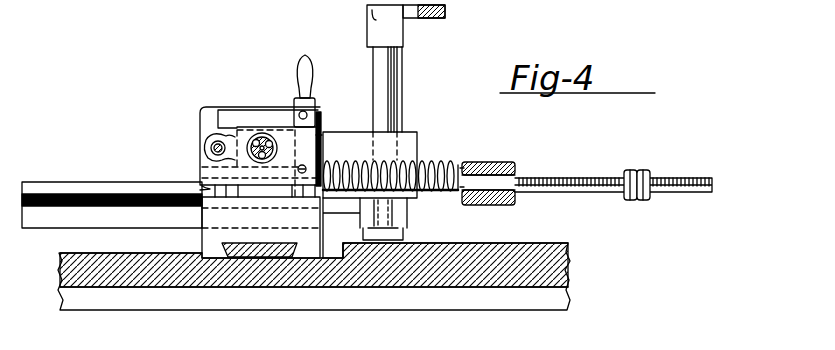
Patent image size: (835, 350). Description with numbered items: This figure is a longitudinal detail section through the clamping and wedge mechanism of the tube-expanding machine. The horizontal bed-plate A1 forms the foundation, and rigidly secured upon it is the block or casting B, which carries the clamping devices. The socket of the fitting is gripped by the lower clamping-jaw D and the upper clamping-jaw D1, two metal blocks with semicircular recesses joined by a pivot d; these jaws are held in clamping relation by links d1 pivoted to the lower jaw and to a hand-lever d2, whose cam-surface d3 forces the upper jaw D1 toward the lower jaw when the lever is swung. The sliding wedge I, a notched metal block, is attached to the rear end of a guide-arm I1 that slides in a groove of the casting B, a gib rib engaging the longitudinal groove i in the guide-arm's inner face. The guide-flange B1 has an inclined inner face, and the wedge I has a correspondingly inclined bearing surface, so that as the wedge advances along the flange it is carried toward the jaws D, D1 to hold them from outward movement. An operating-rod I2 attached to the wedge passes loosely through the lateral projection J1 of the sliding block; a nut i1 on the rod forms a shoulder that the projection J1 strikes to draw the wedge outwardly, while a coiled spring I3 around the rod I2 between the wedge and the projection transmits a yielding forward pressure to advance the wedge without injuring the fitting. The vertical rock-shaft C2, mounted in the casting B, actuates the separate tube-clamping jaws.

The bed-plate A1 is at (507, 247).
The guide-arm I1 is at (135, 215).
The longitudinal groove i is at (100, 192).
The clamping-jaw D is at (282, 165).
The sliding wedge I is at (263, 117).
The upper clamping-jaw D1 is at (250, 128).
The pivot d is at (208, 147).
The hand-lever d2 is at (313, 110).
The cam-surface d3 is at (322, 126).
The link d1 is at (322, 137).
The block or casting B is at (222, 218).
The guide-flange B1 is at (420, 138).
The vertical rock-shaft C2 is at (400, 75).
The coiled spring I3 is at (453, 166).
The lateral projection J1 is at (500, 162).
The operating-rod I2 is at (535, 178).
The nut i1 is at (632, 170).